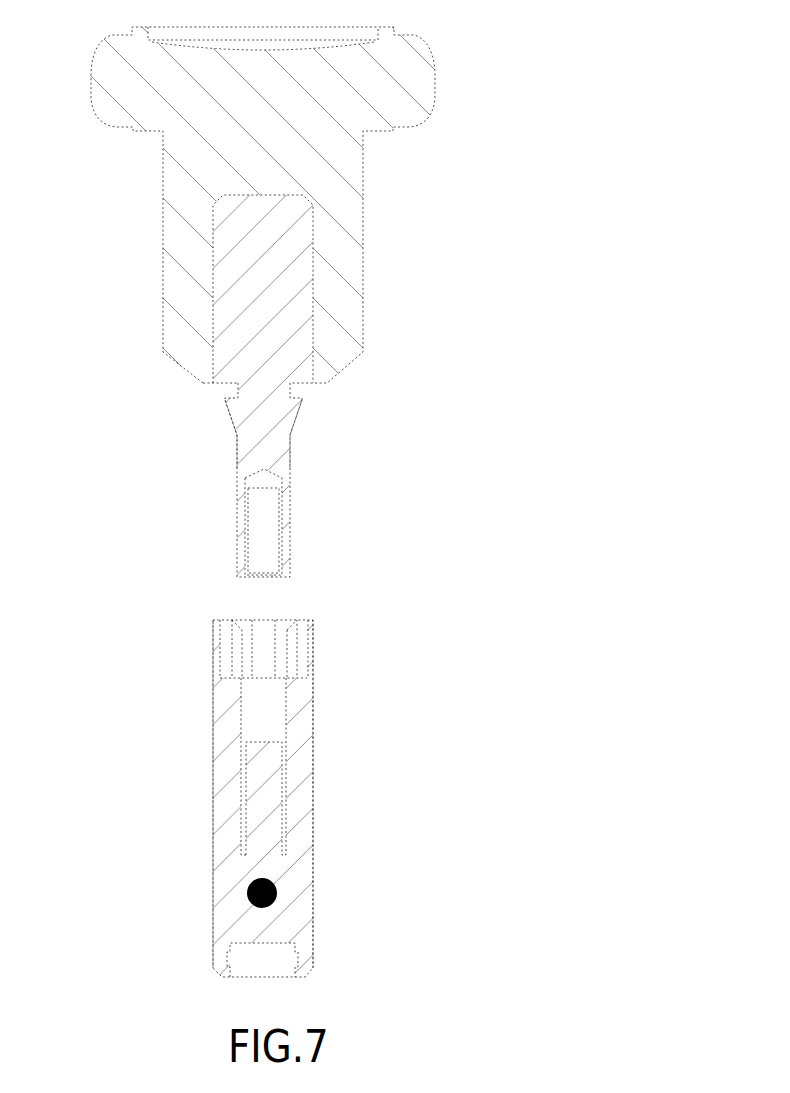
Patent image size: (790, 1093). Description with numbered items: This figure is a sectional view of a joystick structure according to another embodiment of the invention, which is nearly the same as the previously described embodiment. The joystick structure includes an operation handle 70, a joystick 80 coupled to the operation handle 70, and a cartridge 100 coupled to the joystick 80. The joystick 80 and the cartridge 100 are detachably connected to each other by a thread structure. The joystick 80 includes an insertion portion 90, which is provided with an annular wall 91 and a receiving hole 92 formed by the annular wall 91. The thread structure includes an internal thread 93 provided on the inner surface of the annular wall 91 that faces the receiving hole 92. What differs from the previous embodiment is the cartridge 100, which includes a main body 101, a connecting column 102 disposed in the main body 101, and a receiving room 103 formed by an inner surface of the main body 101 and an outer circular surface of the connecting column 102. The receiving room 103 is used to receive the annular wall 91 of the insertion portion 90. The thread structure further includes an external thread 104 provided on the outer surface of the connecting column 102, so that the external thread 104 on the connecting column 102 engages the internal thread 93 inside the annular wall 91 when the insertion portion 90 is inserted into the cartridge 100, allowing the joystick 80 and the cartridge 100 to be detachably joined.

The operation handle 70 is at (363, 240).
The joystick 80 is at (238, 290).
The insertion portion 90 is at (326, 419).
The annular wall 91 is at (292, 467).
The receiving hole 92 is at (270, 531).
The internal thread 93 is at (288, 553).
The cartridge 100 is at (349, 667).
The main body 101 is at (222, 824).
The connecting column 102 is at (288, 800).
The receiving room 103 is at (245, 720).
The external thread 104 is at (288, 767).